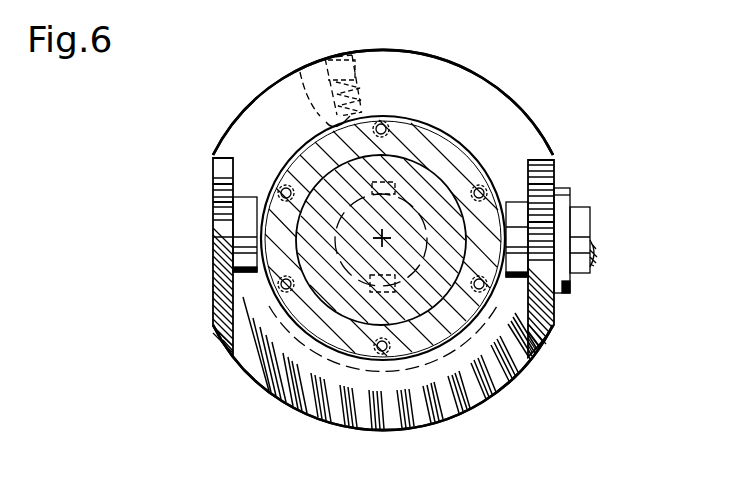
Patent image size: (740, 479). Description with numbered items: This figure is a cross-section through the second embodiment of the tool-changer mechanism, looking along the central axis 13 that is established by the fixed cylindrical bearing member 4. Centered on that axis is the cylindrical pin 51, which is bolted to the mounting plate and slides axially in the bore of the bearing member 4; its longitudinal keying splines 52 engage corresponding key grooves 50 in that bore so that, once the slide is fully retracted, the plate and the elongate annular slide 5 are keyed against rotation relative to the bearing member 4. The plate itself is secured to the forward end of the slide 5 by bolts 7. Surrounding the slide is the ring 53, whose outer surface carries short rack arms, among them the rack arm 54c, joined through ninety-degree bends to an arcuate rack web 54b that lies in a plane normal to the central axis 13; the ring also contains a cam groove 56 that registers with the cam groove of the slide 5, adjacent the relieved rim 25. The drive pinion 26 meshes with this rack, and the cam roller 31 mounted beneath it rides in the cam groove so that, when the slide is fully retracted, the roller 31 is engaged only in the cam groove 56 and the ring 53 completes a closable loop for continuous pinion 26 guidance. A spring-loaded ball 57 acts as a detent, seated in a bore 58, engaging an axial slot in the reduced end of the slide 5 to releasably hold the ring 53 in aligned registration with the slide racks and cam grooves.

The key grooves 50 is at (412, 138).
The ring 53 is at (267, 127).
The keying splines 52 is at (453, 418).
The rack web 54b is at (389, 412).
The central axis 13 is at (386, 181).
The cylindrical pin 51 is at (367, 205).
The annular slide 5 is at (440, 327).
The bore 58 is at (325, 119).
The spring-loaded ball 57 is at (371, 105).
The cam groove 56 is at (245, 243).
The rack arm 54c is at (224, 227).
The bolts 7 is at (232, 323).
The rim 25 is at (518, 327).
The cam roller 31 is at (508, 202).
The drive pinion 26 is at (572, 205).
The bearing member 4 is at (440, 250).